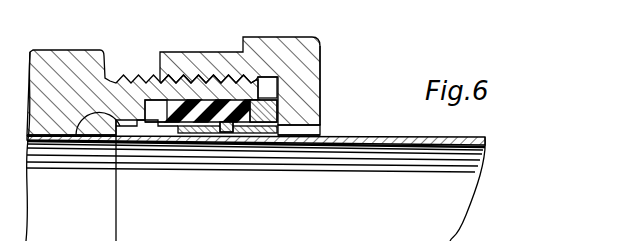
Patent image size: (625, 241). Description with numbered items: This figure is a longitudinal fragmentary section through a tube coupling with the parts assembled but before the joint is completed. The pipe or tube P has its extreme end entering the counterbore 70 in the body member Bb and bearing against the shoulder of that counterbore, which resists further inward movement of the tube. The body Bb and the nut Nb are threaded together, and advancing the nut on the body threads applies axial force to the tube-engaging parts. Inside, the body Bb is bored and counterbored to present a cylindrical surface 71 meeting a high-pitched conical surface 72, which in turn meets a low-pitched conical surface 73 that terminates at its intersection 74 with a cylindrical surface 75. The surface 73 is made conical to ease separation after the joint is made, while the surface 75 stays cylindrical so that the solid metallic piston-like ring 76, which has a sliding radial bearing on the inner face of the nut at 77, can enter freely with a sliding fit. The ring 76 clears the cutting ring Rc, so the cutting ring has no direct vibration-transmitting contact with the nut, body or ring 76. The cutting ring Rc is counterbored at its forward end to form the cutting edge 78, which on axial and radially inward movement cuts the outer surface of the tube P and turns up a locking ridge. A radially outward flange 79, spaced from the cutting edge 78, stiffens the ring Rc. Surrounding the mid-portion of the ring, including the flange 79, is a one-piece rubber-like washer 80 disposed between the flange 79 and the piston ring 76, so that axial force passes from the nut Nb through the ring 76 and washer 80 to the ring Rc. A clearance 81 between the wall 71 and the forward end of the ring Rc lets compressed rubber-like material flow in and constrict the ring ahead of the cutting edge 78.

The body member Bb is at (58, 72).
The nut Nb is at (300, 50).
The counterbore 70 is at (80, 133).
The cylindrical surface 71 is at (143, 110).
The high-pitched conical surface 72 is at (175, 110).
The low-pitched conical surface 73 is at (224, 103).
The intersection 74 is at (250, 78).
The cylindrical surface 75 is at (257, 77).
The piston-like ring 76 is at (300, 83).
The inner face of the nut 77 is at (283, 117).
The cutting edge 78 is at (172, 137).
The flange 79 is at (227, 134).
The rubber-like washer 80 is at (188, 130).
The clearance 81 is at (106, 117).
The cutting ring Rc is at (225, 137).
The pipe or tube P is at (283, 187).